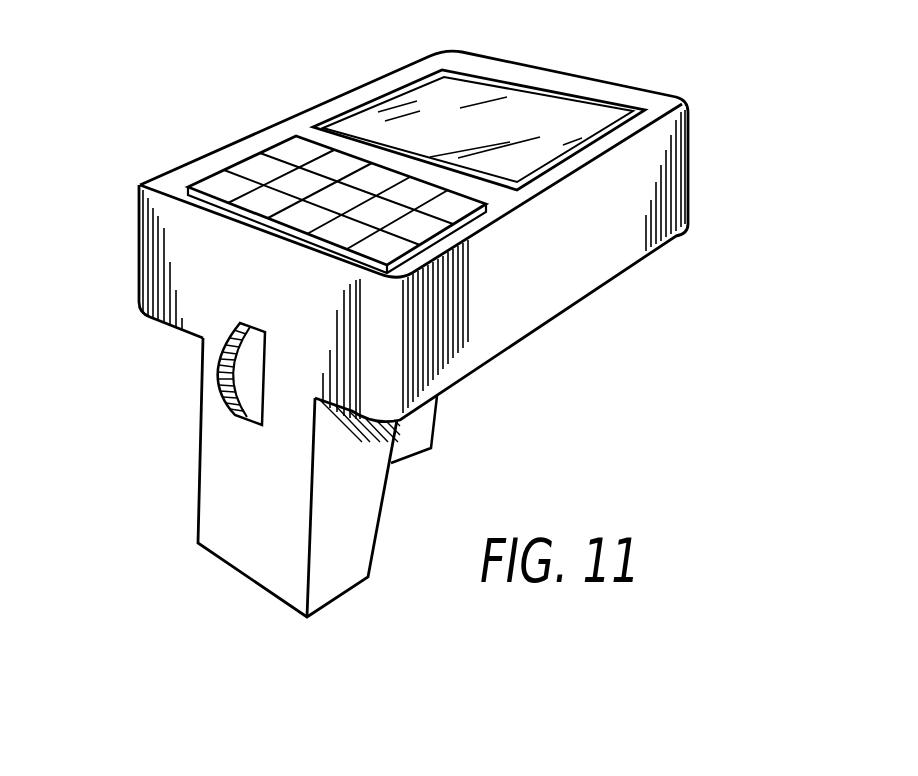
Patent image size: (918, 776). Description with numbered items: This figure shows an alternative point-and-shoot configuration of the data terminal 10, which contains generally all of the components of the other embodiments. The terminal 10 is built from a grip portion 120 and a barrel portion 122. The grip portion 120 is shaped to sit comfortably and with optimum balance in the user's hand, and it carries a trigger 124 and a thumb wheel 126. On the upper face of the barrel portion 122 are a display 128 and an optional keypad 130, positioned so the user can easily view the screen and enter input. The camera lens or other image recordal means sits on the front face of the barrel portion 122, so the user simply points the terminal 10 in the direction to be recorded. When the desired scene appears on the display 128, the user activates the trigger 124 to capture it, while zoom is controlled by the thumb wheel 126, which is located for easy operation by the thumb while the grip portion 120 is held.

The terminal 10 is at (612, 246).
The grip portion 120 is at (255, 547).
The barrel portion 122 is at (662, 193).
The trigger 124 is at (417, 422).
The thumb wheel 126 is at (220, 388).
The display 128 is at (568, 120).
The keypad 130 is at (216, 179).